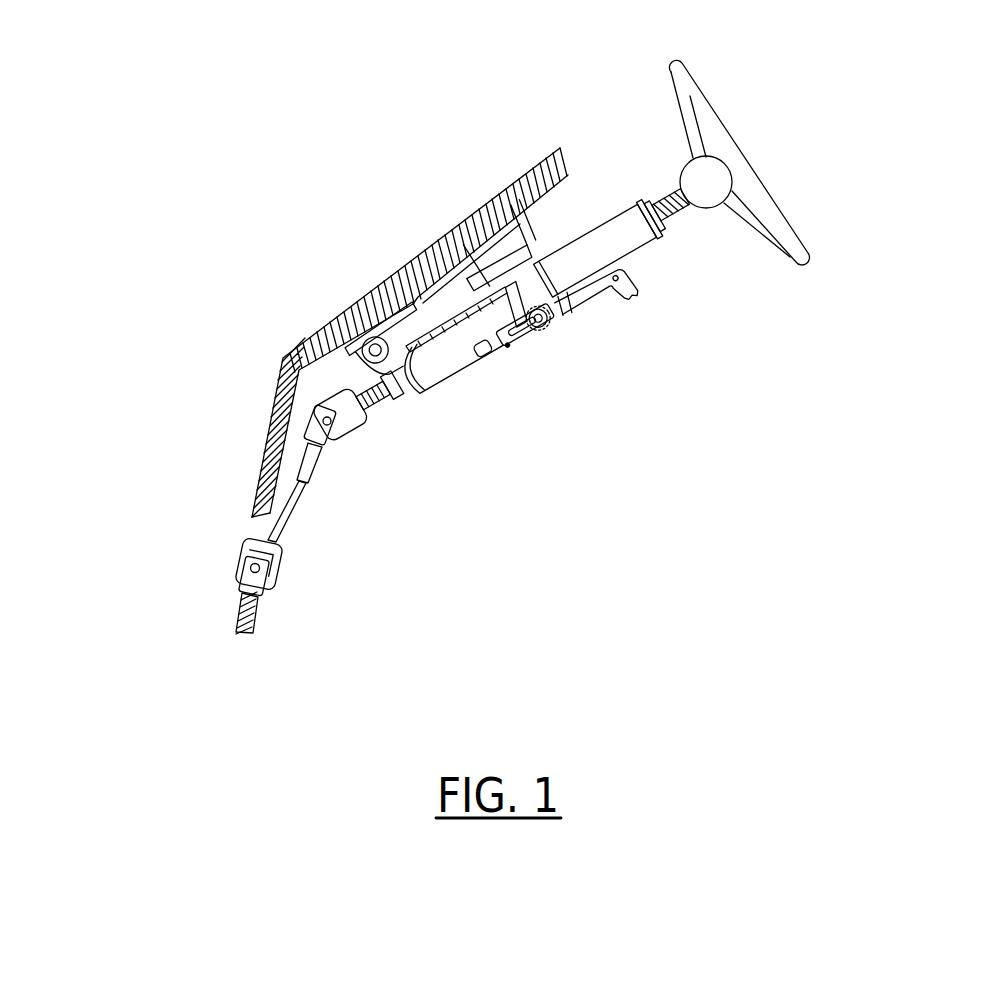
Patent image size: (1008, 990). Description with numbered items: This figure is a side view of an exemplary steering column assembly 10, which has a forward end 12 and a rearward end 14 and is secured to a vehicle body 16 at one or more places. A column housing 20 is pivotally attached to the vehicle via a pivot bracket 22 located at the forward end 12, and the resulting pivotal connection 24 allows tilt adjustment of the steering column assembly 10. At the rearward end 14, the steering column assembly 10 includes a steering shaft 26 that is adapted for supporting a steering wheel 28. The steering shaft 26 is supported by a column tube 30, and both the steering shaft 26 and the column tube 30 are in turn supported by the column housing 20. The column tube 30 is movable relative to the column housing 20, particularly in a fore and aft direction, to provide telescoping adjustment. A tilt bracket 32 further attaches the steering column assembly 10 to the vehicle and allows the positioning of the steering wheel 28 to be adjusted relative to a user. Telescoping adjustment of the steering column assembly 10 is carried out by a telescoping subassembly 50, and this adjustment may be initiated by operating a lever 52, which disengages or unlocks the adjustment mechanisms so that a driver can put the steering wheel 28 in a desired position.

The steering column assembly 10 is at (522, 291).
The forward end 12 is at (157, 469).
The rearward end 14 is at (764, 141).
The vehicle body 16 is at (372, 320).
The column housing 20 is at (458, 358).
The pivot bracket 22 is at (393, 372).
The pivotal connection 24 is at (365, 338).
The steering shaft 26 is at (672, 190).
The steering wheel 28 is at (673, 62).
The column tube 30 is at (618, 228).
The tilt bracket 32 is at (545, 243).
The telescoping subassembly 50 is at (527, 349).
The lever 52 is at (587, 294).